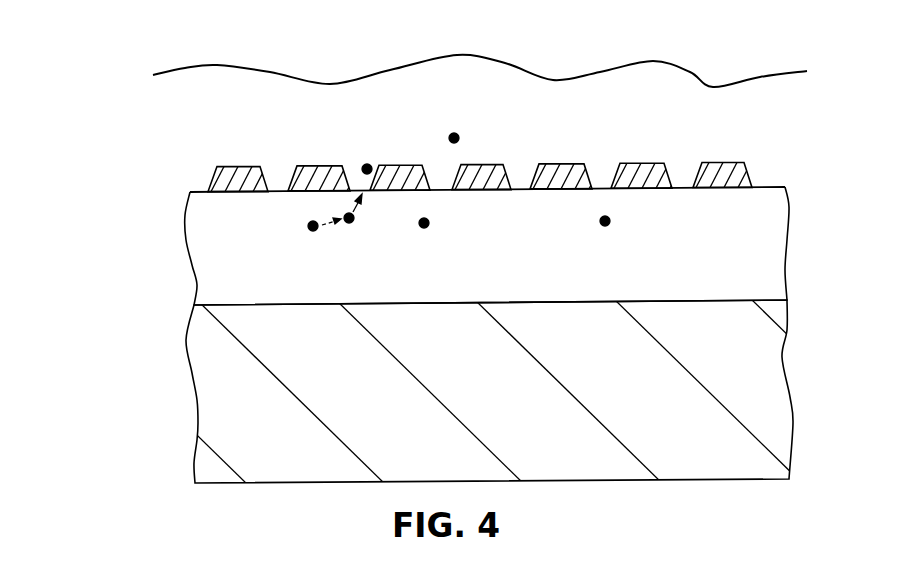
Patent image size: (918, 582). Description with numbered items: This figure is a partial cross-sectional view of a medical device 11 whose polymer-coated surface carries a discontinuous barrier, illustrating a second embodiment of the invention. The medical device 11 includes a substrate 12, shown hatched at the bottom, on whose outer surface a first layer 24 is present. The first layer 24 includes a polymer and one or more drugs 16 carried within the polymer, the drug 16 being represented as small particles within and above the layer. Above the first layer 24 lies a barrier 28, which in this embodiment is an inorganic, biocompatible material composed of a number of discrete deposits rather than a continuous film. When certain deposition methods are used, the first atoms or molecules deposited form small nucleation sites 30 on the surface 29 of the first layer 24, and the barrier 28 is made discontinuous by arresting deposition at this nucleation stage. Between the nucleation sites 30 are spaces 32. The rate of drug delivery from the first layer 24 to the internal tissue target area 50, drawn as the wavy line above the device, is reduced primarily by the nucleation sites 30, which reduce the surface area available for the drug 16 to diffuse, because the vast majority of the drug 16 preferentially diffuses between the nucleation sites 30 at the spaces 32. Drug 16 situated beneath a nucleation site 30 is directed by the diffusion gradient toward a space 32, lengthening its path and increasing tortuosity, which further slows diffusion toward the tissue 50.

The medical device 11 is at (80, 182).
The substrate 12 is at (197, 428).
The drug 16 is at (455, 196).
The first layer 24 is at (185, 242).
The barrier 28 is at (508, 151).
The surface 29 is at (196, 192).
The nucleation sites 30 is at (215, 171).
The spaces 32 is at (278, 193).
The internal tissue target area 50 is at (173, 71).